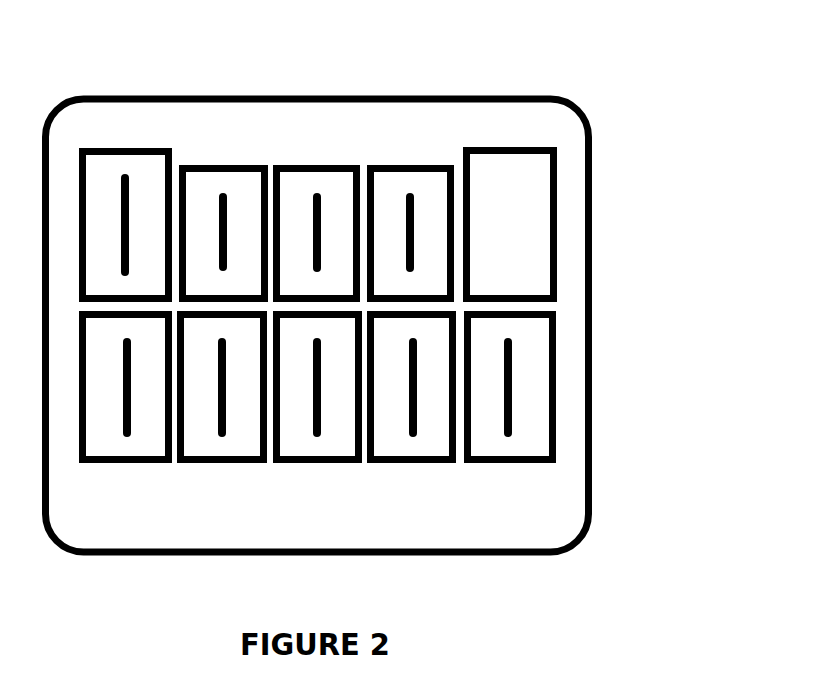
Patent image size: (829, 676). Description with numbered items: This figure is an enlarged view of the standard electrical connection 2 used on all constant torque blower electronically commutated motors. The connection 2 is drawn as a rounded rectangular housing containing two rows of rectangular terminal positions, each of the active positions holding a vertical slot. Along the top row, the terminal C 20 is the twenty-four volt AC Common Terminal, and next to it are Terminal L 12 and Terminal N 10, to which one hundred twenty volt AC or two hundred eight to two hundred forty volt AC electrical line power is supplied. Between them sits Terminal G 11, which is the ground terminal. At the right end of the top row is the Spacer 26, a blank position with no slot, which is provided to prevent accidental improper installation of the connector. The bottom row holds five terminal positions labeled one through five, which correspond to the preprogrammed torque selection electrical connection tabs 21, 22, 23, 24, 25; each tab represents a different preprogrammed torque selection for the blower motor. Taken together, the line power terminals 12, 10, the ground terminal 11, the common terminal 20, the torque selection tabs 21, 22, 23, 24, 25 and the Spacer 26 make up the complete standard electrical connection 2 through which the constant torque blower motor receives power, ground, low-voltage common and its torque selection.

The standard electrical connection 2 is at (555, 133).
The Terminal N 10 is at (425, 196).
The Terminal G 11 is at (333, 195).
The Terminal L 12 is at (238, 193).
The terminal C 20 is at (146, 187).
The preprogrammed torque selection electrical connection tab 21 is at (102, 430).
The preprogrammed torque selection electrical connection tab 22 is at (203, 430).
The preprogrammed torque selection electrical connection tab 23 is at (298, 428).
The preprogrammed torque selection electrical connection tab 24 is at (393, 428).
The preprogrammed torque selection electrical connection tab 25 is at (490, 428).
The Spacer 26 is at (518, 198).